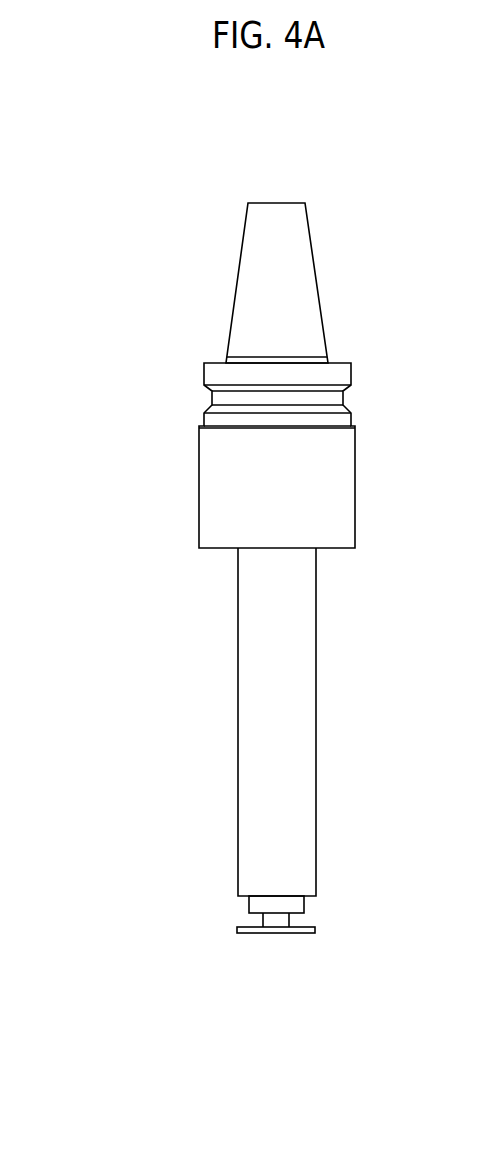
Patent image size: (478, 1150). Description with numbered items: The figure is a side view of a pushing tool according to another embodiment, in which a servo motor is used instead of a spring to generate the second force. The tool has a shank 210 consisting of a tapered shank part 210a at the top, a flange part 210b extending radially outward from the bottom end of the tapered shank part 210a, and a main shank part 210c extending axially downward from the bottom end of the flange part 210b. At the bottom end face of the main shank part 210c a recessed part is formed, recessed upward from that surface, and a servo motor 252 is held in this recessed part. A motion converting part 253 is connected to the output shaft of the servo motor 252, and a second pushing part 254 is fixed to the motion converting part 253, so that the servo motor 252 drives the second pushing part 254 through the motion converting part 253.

The shank 210 is at (102, 365).
The tapered shank part 210a is at (250, 306).
The flange part 210b is at (213, 466).
The main shank part 210c is at (253, 634).
The servo motor 252 is at (287, 903).
The motion converting part 253 is at (278, 921).
The second pushing part 254 is at (237, 930).